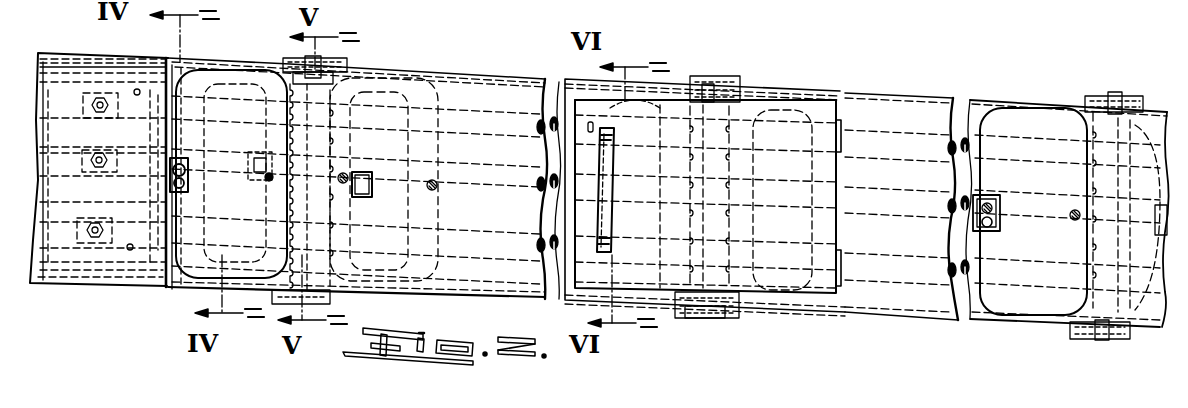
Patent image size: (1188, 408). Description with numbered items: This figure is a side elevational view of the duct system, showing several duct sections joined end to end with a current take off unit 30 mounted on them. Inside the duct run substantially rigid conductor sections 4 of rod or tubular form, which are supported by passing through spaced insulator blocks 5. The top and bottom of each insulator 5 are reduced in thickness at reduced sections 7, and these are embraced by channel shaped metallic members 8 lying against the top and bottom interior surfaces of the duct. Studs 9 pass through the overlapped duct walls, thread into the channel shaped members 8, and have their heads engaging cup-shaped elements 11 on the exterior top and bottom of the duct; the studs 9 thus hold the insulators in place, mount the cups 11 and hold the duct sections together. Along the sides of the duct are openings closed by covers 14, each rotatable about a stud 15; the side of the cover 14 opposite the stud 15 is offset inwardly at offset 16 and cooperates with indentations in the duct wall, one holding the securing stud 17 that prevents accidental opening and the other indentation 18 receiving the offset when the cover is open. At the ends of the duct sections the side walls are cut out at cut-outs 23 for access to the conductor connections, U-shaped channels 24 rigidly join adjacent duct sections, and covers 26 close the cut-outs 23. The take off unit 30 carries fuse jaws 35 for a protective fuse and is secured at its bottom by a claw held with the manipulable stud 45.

The conductor sections 4 is at (540, 132).
The insulator blocks 5 is at (748, 88).
The reduced sections 7 is at (342, 67).
The channel shaped metallic members 8 is at (287, 62).
The studs 9 is at (308, 300).
The cup-shaped elements 11 is at (345, 60).
The cover 14 is at (246, 78).
The stud 15 is at (268, 181).
The inward offset 16 is at (998, 226).
The securing stud 17 is at (994, 208).
The indentation 18 is at (362, 195).
The cut out 23 is at (178, 58).
The U-shaped channels 24 is at (196, 66).
The covers 26 is at (66, 286).
The current take off unit 30 is at (832, 222).
The fuse jaws 35 is at (612, 230).
The manipulable stud 45 is at (700, 318).